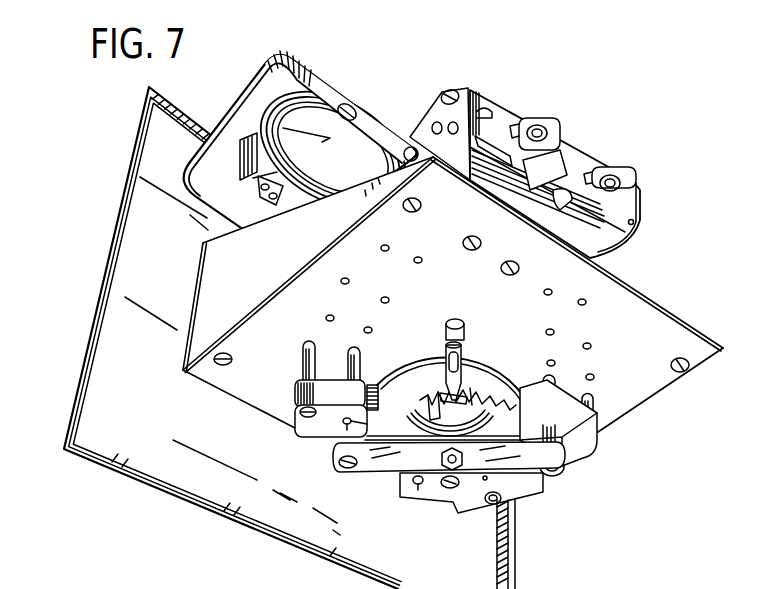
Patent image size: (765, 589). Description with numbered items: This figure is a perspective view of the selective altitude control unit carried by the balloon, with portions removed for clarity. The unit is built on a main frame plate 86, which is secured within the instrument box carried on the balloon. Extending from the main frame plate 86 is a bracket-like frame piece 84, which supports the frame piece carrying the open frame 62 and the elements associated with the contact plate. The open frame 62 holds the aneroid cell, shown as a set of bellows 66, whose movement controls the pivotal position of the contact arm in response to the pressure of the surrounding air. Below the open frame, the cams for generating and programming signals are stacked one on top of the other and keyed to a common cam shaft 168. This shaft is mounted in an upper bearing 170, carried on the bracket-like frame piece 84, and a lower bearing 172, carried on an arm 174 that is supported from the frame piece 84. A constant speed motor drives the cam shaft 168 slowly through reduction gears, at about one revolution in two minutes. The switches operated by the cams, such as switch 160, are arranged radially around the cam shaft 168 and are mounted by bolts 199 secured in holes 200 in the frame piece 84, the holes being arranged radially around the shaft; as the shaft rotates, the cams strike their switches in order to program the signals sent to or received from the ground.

The open frame 62 is at (305, 147).
The bellows 66 is at (265, 125).
The bracket-like frame piece 84 is at (453, 338).
The main frame plate 86 is at (177, 490).
The switch 160 is at (313, 430).
The cam shaft 168 is at (462, 340).
The upper bearing 170 is at (464, 330).
The lower bearing 172 is at (443, 470).
The arm 174 is at (403, 457).
The bolts 199 is at (346, 357).
The holes 200 is at (366, 329).